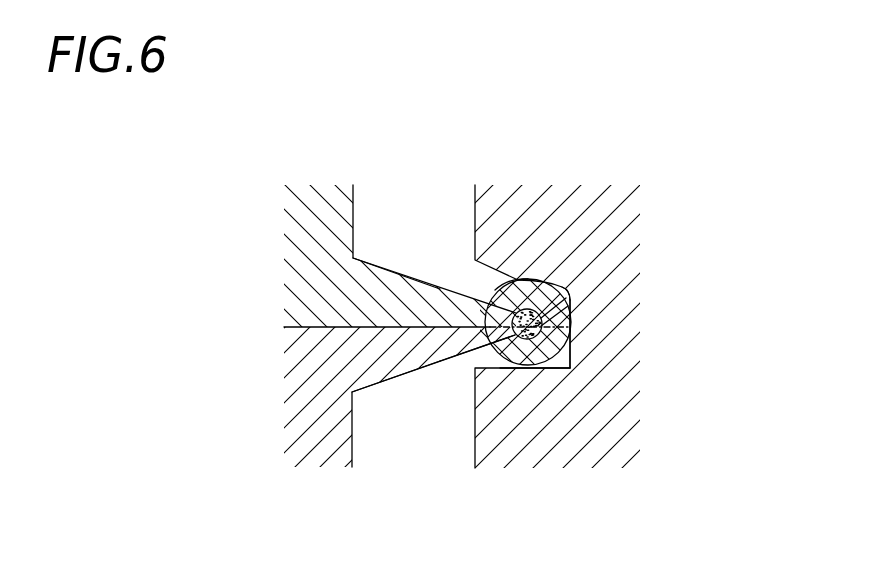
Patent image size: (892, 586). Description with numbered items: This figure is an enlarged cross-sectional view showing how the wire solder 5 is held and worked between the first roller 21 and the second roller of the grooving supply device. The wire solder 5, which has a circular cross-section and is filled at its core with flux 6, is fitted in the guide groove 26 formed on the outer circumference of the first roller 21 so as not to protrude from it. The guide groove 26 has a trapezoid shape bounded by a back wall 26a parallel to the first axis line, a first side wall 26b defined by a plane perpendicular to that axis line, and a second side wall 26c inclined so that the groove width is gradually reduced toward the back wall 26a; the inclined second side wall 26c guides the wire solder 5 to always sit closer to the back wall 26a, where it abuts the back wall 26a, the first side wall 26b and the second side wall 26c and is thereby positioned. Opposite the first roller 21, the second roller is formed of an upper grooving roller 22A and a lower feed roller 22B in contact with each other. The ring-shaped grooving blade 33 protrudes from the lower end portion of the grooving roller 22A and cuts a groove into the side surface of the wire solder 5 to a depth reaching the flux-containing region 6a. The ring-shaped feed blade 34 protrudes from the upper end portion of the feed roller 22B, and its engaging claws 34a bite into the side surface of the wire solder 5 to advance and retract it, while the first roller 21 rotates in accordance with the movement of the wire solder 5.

The first roller 21 is at (590, 223).
The grooving roller 22A is at (318, 231).
The feed roller 22B is at (322, 430).
The grooving blade 33 is at (418, 257).
The feed blade 34 is at (404, 403).
The engaging claw 34a is at (421, 343).
The guide groove 26 is at (490, 278).
The back wall 26a is at (574, 350).
The first side wall 26b is at (539, 368).
The second side wall 26c is at (510, 270).
The wire solder 5 is at (553, 328).
The flux 6 is at (572, 287).
The flux-containing region 6a is at (575, 295).